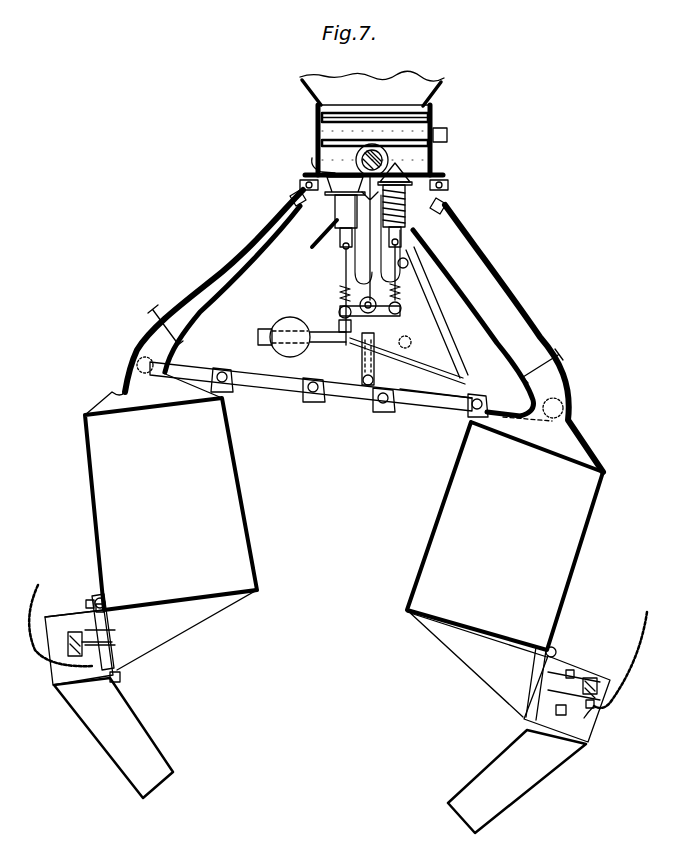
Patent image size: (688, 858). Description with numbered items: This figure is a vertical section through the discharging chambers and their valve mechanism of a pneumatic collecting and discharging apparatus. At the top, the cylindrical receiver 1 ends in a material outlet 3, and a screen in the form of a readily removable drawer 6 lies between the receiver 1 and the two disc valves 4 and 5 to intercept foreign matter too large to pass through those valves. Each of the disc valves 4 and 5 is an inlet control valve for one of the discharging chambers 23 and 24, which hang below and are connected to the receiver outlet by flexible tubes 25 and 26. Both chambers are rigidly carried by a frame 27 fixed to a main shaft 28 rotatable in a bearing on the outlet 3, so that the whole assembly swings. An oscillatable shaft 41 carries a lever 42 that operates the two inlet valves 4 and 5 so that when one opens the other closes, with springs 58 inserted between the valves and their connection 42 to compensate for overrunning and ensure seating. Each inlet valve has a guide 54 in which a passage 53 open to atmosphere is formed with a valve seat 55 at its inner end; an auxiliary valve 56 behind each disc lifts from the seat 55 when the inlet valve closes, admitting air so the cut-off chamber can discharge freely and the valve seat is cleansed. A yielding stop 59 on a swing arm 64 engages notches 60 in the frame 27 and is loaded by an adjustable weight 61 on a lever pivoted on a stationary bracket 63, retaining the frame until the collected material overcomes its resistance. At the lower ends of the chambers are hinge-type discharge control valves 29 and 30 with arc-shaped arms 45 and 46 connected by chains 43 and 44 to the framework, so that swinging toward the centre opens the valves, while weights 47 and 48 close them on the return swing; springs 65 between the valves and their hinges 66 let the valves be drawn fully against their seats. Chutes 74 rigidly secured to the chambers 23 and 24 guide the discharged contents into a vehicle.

The cylindrical receiver 1 is at (321, 80).
The material outlet 3 is at (345, 105).
The disc valve 4 is at (405, 170).
The disc valve 5 is at (322, 165).
The drawer 6 is at (335, 130).
The discharging chamber 23 is at (248, 503).
The discharging chamber 24 is at (432, 520).
The flexible tube 25 is at (222, 264).
The flexible tube 26 is at (476, 260).
The frame 27 is at (290, 382).
The main shaft 28 is at (390, 158).
The discharge control valve 29 is at (94, 628).
The discharge control valve 30 is at (556, 665).
The oscillatable shaft 41 is at (345, 316).
The lever 42 is at (430, 312).
The chain 43 is at (60, 614).
The chain 44 is at (645, 615).
The arc-shaped arm 45 is at (50, 640).
The arc-shaped arm 46 is at (610, 708).
The weight 47 is at (82, 634).
The weight 48 is at (588, 678).
The passage 53 is at (406, 204).
The guide 54 is at (293, 203).
The valve seat 55 is at (334, 194).
The auxiliary valve 56 is at (308, 184).
The spring 58 is at (343, 298).
The yielding stop 59 is at (366, 392).
The notch 60 is at (318, 402).
The adjustable weight 61 is at (286, 326).
The stationary bracket 63 is at (432, 336).
The swing arm 64 is at (433, 386).
The spring 65 is at (88, 600).
The hinge 66 is at (100, 604).
The chute 74 is at (160, 760).